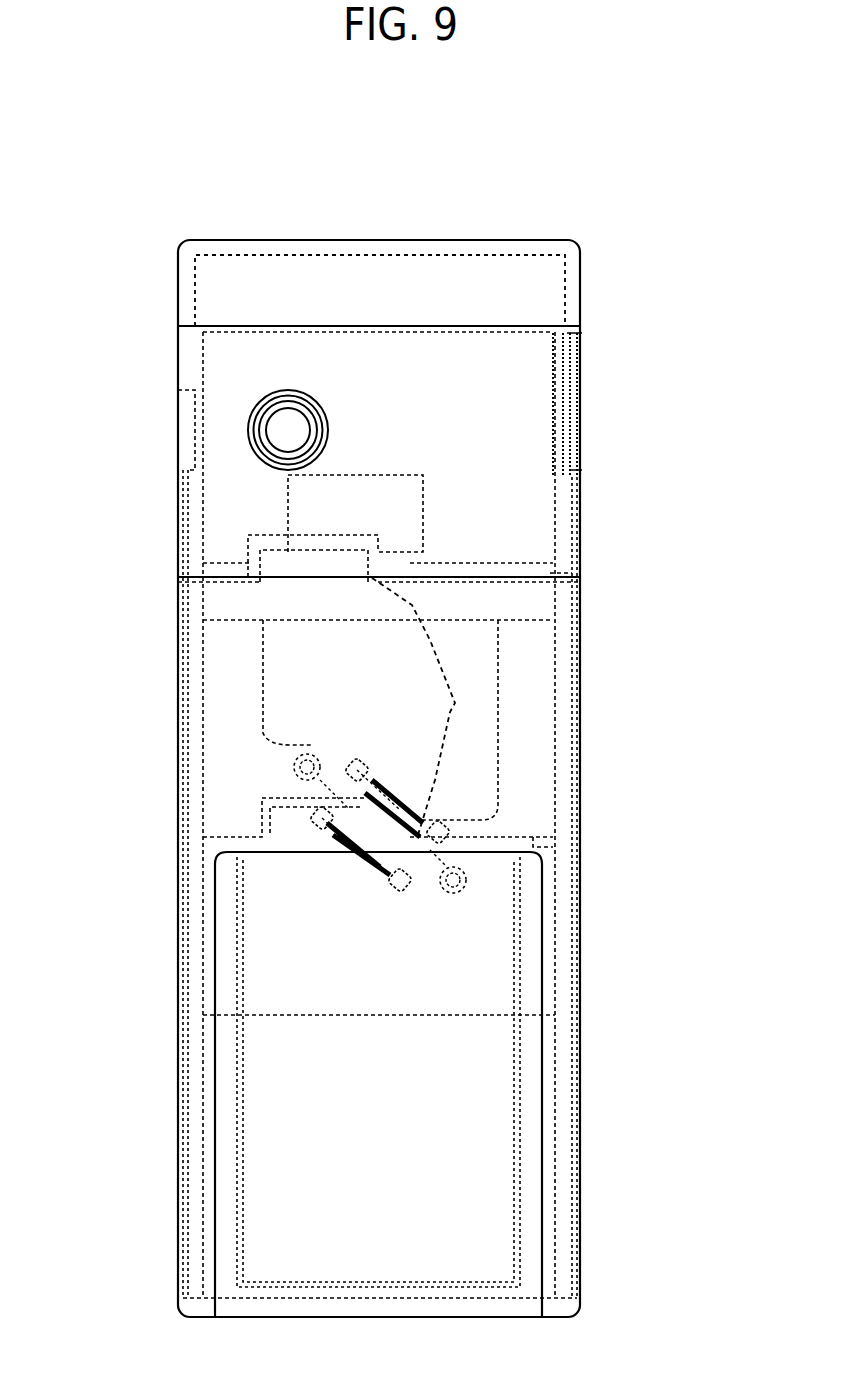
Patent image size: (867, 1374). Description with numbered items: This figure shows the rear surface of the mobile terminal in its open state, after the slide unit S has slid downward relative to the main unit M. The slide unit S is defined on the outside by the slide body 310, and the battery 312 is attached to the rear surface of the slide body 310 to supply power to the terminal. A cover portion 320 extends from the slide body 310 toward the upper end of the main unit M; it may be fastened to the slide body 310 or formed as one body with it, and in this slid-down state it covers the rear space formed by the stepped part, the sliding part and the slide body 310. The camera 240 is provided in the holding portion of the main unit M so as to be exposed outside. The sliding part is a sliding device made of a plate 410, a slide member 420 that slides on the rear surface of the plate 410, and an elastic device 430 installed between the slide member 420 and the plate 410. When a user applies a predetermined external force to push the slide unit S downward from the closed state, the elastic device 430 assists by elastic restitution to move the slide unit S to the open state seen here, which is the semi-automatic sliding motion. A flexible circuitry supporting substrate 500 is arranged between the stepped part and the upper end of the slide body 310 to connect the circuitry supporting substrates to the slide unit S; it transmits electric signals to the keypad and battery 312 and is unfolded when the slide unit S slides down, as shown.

The main unit M is at (160, 189).
The slide unit S is at (614, 1137).
The camera 240 is at (257, 401).
The slide body 310 is at (193, 962).
The battery 312 is at (217, 895).
The cover portion 320 is at (530, 700).
The plate 410 is at (262, 713).
The slide member 420 is at (270, 1015).
The elastic device 430 is at (405, 790).
The flexible circuitry supporting substrate 500 is at (427, 627).